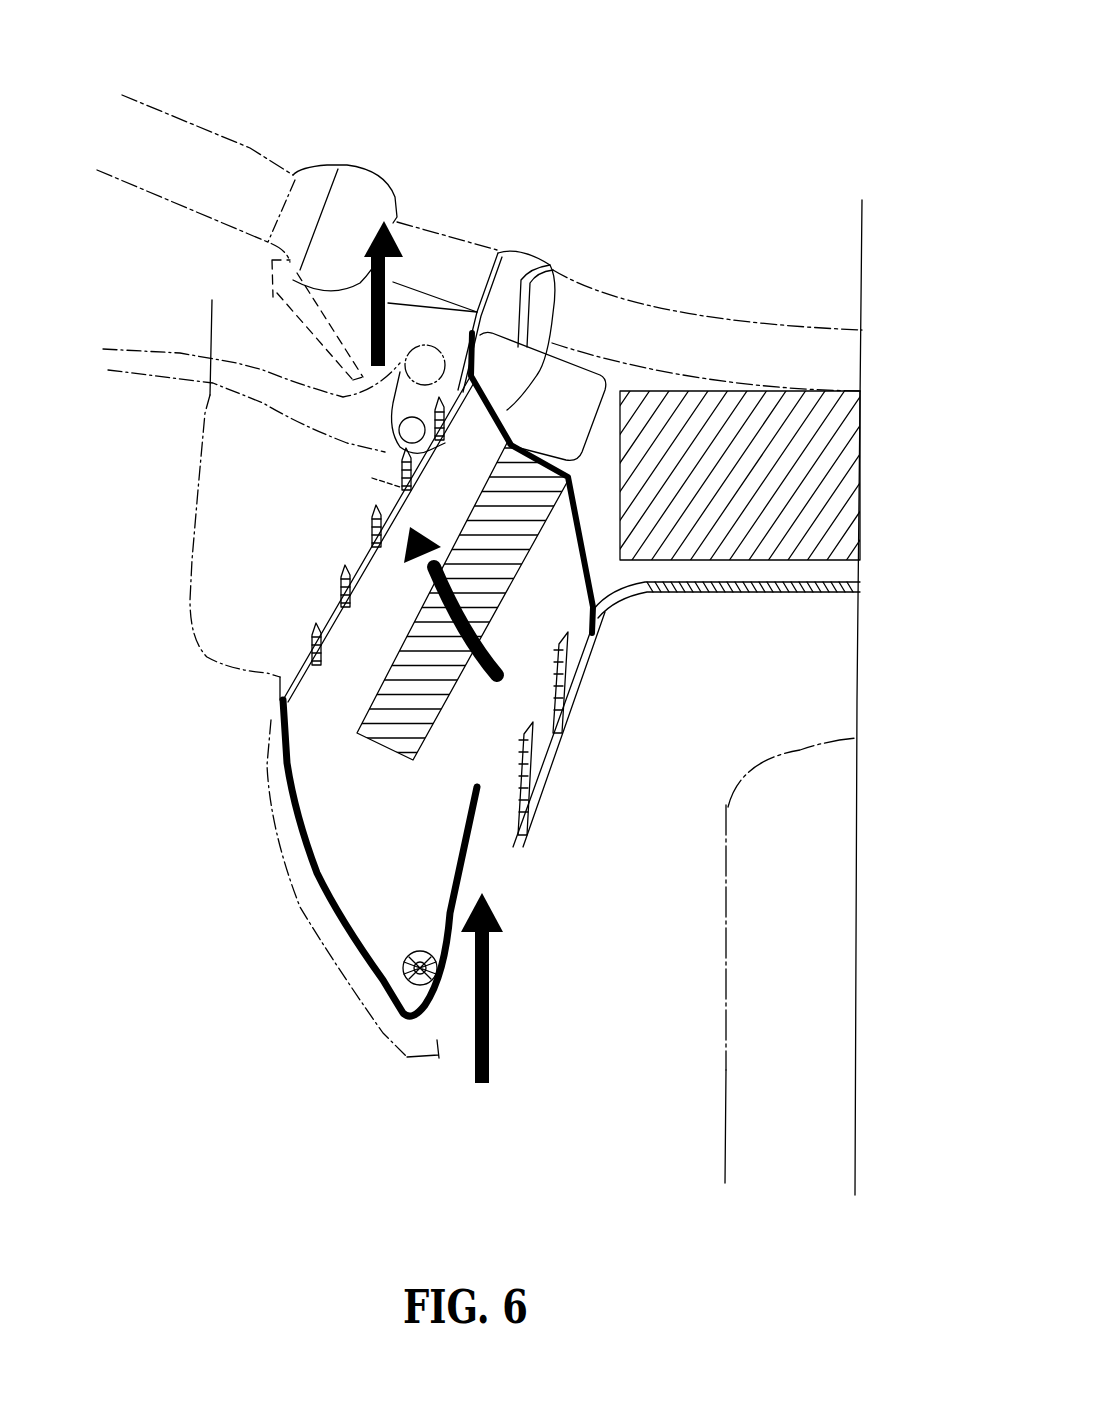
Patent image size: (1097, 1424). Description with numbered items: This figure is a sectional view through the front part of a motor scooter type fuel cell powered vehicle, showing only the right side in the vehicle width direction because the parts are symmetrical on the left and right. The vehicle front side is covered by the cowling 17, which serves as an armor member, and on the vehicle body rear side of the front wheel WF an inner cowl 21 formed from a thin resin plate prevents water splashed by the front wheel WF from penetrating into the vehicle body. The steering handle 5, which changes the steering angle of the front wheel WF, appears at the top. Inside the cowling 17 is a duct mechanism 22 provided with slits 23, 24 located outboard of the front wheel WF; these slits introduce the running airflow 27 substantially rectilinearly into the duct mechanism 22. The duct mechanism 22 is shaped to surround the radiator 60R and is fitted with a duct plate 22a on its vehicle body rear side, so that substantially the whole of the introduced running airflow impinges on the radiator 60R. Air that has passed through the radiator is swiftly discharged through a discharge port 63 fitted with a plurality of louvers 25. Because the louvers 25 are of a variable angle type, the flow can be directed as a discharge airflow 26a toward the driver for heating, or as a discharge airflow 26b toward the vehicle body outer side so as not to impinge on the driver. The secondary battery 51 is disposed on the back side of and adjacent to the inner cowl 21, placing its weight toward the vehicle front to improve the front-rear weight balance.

The steering handle 5 is at (250, 145).
The cowling 17 is at (320, 950).
The inner cowl 21 is at (713, 587).
The duct mechanism 22 is at (307, 893).
The duct plate 22a is at (553, 340).
The slit 23 is at (612, 706).
The slit 24 is at (523, 902).
The louver 25 is at (378, 493).
The discharge airflow toward the driver 26a is at (393, 298).
The discharge airflow toward the vehicle body outer side 26b is at (315, 320).
The running airflow 27 is at (467, 1017).
The secondary battery 51 is at (730, 400).
The radiator 60R is at (387, 742).
The discharge port 63 is at (300, 603).
The front wheel WF is at (726, 973).